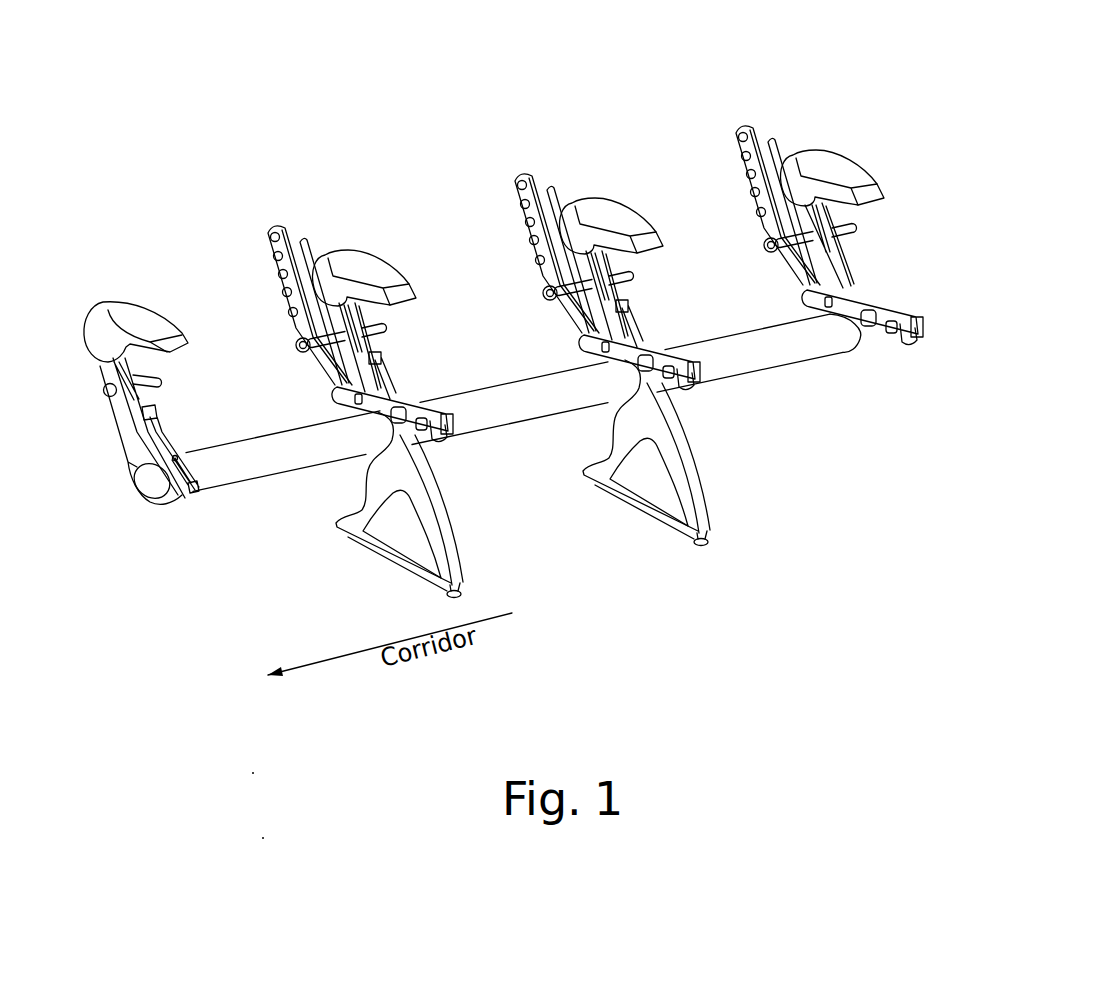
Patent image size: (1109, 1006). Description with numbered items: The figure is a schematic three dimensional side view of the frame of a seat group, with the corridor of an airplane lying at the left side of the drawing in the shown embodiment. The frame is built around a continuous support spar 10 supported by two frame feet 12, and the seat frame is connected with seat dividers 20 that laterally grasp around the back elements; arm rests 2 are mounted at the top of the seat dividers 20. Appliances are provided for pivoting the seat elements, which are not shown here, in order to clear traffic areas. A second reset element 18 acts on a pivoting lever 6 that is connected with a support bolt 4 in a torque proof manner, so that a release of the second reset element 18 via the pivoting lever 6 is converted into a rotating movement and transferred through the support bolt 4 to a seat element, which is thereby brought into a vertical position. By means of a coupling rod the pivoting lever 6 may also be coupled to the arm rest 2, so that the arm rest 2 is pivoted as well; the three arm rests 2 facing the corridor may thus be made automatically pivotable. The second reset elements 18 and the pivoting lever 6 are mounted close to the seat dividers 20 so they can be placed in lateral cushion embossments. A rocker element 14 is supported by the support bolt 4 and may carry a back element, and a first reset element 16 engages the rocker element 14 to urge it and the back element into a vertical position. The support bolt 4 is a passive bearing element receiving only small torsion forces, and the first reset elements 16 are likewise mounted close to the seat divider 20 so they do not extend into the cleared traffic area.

The arm rest 2 is at (140, 305).
The support bolt 4 is at (306, 243).
The pivoting lever 6 is at (148, 393).
The continuous support spar 10 is at (153, 485).
The leg 12 is at (407, 483).
The rocker element 14 is at (267, 245).
The first reset element 16 is at (620, 348).
The second reset element 18 is at (170, 450).
The seat divider 20 is at (130, 440).